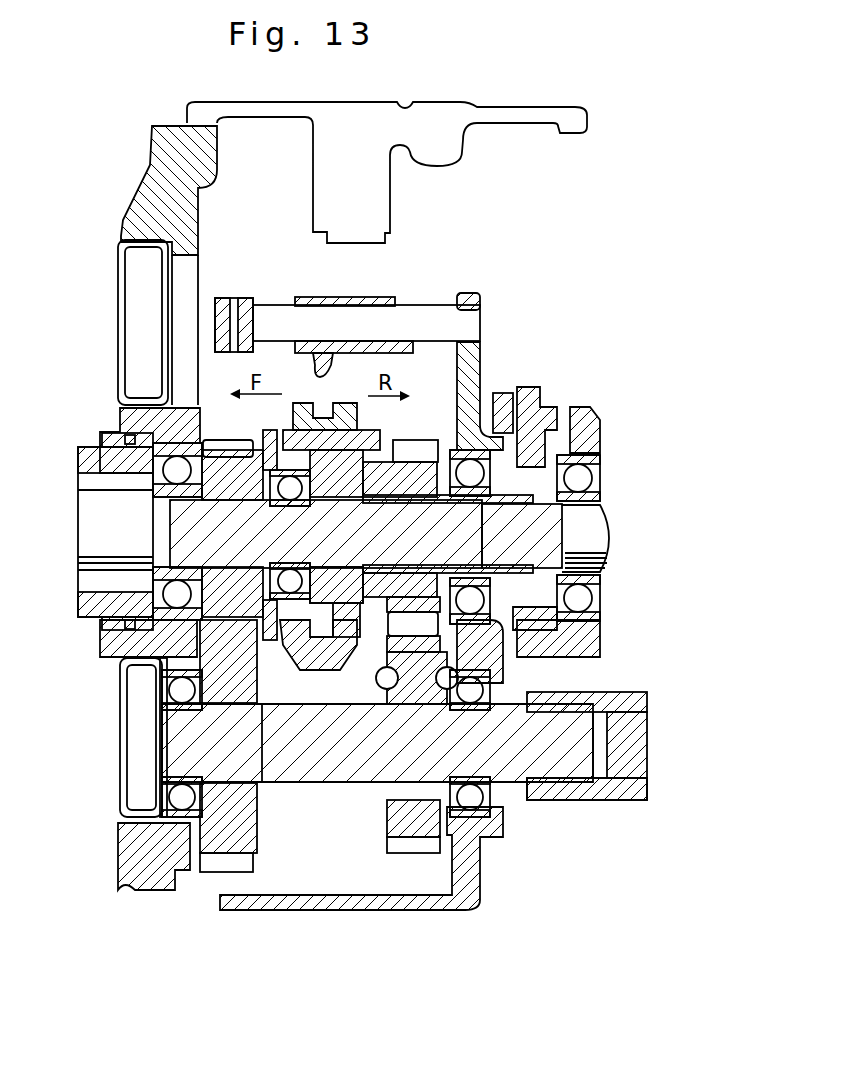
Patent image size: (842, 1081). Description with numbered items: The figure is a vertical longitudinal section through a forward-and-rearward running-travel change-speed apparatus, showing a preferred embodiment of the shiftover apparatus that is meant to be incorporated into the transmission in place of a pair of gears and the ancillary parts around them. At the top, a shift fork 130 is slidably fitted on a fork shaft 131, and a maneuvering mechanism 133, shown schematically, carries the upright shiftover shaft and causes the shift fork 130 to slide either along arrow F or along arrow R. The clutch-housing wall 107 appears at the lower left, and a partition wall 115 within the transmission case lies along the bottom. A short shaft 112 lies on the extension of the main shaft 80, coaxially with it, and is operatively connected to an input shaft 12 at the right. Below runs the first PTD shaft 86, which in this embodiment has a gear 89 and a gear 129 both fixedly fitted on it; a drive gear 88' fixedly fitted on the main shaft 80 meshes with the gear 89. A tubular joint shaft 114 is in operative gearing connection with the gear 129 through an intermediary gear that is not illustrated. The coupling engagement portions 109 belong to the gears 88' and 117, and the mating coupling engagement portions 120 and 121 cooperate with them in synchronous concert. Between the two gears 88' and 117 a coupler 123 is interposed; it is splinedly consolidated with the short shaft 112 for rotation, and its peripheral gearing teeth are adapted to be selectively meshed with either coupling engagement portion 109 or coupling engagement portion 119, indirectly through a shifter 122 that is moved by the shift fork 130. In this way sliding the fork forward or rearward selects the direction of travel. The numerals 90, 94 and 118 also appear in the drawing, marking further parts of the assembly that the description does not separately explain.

The input shaft 12 is at (598, 532).
The main shaft 80 is at (95, 548).
The first PTD shaft 86 is at (325, 783).
The drive gear 88' is at (160, 489).
The gear 89 is at (243, 866).
The flange 90 is at (635, 758).
The flange plate 94 is at (598, 800).
The clutch-housing wall 107 is at (132, 860).
The coupling engagement portions 109 is at (272, 640).
The short shaft 112 is at (338, 553).
The tubular joint shaft 114 is at (515, 577).
The partition wall 115 is at (462, 902).
The gear 117 is at (412, 445).
The intermediate shaft 118 is at (418, 497).
The coupling engagement portion 119 is at (363, 637).
The mating coupling engagement portion 120 is at (281, 642).
The mating coupling engagement portion 121 is at (337, 672).
The shifter 122 is at (322, 425).
The coupler 123 is at (333, 447).
The gear 129 is at (400, 848).
The shift fork 130 is at (330, 355).
The fork shaft 131 is at (410, 305).
The maneuvering mechanism 133 is at (398, 188).